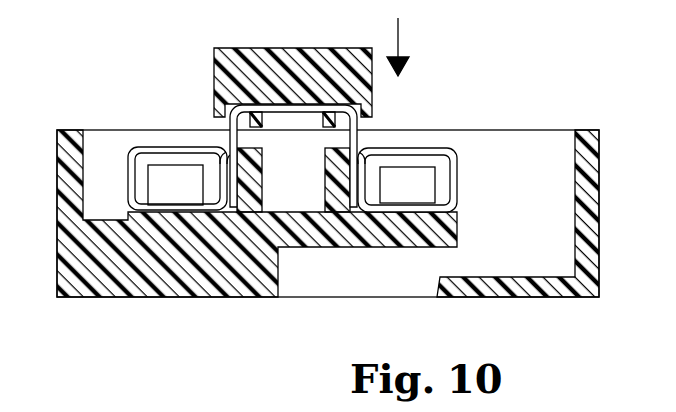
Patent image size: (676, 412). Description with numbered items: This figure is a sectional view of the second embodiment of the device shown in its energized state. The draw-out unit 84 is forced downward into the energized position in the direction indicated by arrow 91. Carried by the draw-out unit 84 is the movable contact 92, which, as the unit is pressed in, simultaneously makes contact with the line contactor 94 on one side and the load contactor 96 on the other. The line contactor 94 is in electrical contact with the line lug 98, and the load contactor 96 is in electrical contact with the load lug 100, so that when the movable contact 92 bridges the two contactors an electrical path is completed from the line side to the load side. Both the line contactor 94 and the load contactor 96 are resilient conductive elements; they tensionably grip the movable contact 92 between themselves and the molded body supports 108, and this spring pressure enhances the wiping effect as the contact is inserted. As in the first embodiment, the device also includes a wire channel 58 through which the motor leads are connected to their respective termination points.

The wire channel 58 is at (330, 279).
The draw-out unit 84 is at (290, 48).
The arrow 91 is at (400, 46).
The movable contact 92 is at (238, 135).
The line contactor 94 is at (218, 163).
The load contactor 96 is at (368, 163).
The line lug 98 is at (145, 183).
The load lug 100 is at (437, 183).
The molded body supports 108 is at (262, 172).